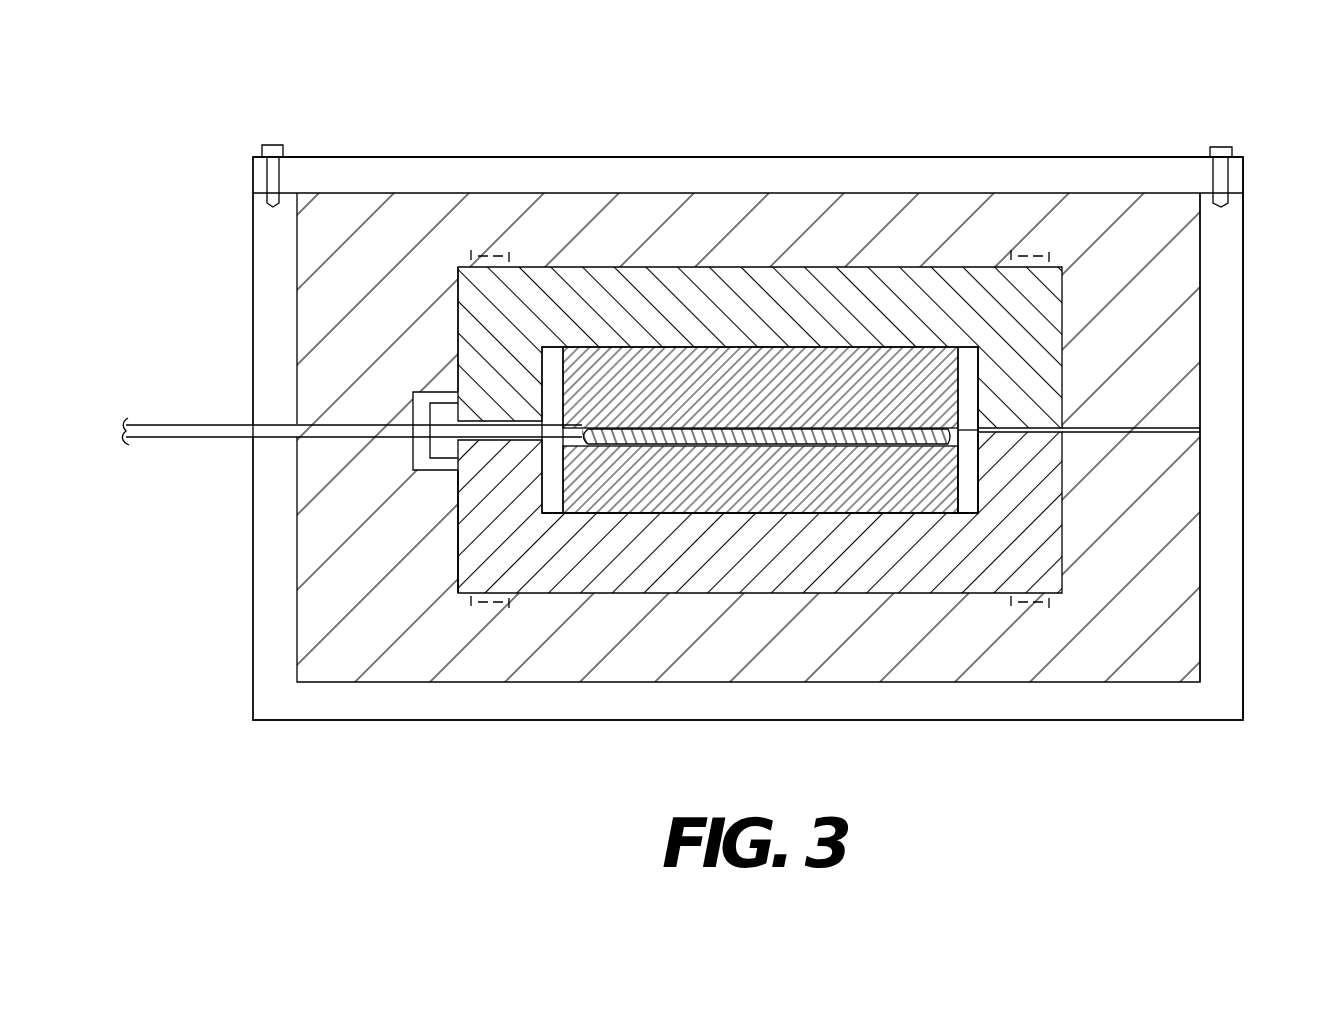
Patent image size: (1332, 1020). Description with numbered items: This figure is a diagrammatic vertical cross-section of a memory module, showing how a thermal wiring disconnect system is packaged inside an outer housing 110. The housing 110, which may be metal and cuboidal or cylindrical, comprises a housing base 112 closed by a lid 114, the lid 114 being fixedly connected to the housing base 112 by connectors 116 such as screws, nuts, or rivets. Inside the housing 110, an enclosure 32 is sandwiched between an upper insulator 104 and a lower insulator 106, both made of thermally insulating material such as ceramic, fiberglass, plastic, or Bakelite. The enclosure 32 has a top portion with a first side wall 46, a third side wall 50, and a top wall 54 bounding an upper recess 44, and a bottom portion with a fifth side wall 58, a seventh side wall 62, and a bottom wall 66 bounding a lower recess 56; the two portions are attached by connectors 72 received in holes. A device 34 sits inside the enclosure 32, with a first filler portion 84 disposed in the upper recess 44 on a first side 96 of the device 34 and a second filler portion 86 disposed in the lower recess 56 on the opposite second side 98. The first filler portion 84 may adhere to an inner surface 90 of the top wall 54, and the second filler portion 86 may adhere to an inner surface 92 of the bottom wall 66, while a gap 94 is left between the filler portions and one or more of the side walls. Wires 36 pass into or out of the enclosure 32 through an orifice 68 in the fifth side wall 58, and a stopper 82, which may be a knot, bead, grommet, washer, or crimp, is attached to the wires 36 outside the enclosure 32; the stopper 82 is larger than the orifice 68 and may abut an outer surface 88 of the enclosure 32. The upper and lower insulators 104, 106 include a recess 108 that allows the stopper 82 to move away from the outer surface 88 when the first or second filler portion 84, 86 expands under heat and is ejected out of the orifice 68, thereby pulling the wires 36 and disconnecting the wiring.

The enclosure 32 is at (873, 106).
The device 34 is at (660, 440).
The wires 36 is at (338, 432).
The upper recess 44 is at (970, 360).
The first side wall 46 is at (473, 298).
The third side wall 50 is at (1047, 402).
The top wall 54 is at (667, 277).
The lower recess 56 is at (973, 517).
The fifth side wall 58 is at (472, 555).
The seventh side wall 62 is at (1047, 554).
The bottom wall 66 is at (847, 570).
The orifice 68 is at (458, 492).
The connectors 72 is at (495, 250).
The stopper 82 is at (433, 395).
The first filler portion 84 is at (915, 370).
The second filler portion 86 is at (927, 487).
The outer surface 88 is at (457, 350).
The inner surface 90 is at (767, 345).
The inner surface 92 is at (743, 517).
The gap 94 is at (967, 465).
The first side 96 is at (837, 427).
The second side 98 is at (787, 445).
The upper insulator 104 is at (1183, 243).
The lower insulator 106 is at (1183, 580).
The recess 108 is at (447, 412).
The housing 110 is at (1246, 327).
The housing base 112 is at (1226, 645).
The lid 114 is at (1027, 170).
The connectors 116 is at (1227, 143).